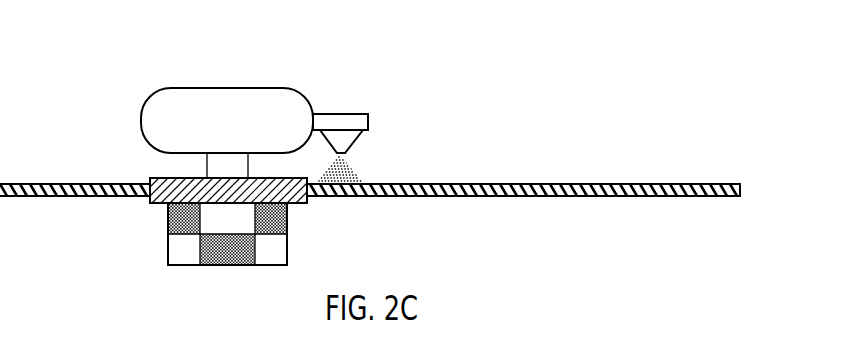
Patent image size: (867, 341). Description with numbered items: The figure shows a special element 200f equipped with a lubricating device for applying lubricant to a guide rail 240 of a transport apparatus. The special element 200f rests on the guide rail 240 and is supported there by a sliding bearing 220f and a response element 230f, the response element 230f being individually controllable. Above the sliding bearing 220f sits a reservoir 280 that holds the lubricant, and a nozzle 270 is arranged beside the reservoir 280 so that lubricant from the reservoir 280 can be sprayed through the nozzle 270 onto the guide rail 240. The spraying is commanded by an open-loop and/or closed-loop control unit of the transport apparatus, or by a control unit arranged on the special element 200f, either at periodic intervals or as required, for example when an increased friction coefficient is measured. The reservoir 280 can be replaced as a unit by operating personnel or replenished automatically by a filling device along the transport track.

The special element 200f is at (149, 167).
The reservoir 280 is at (246, 133).
The nozzle 270 is at (357, 142).
The guide rail 240 is at (687, 182).
The sliding bearing 220f is at (300, 203).
The response element 230f is at (222, 267).